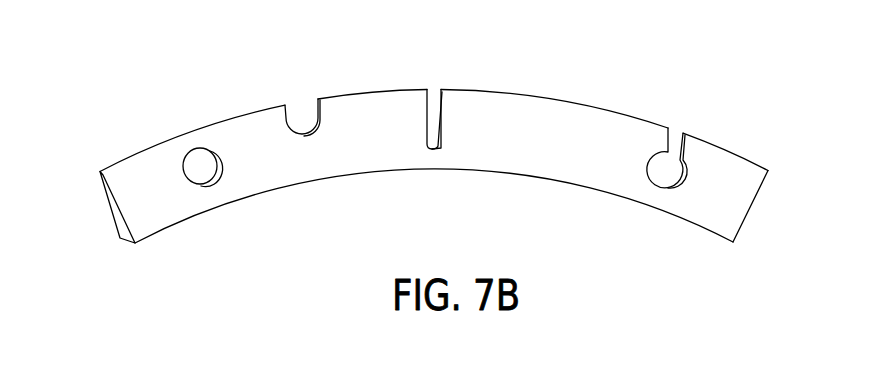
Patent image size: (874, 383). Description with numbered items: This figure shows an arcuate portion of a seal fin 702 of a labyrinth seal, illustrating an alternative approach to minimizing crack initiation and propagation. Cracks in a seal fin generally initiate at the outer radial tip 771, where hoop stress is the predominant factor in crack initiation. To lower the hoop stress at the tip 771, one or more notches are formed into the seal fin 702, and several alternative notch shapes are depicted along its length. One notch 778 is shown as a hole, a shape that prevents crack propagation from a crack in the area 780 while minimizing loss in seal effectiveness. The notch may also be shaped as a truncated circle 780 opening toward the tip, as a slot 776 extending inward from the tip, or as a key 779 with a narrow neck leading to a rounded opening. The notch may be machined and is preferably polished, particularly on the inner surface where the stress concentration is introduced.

The seal fin 702 is at (434, 141).
The outer radial tip 771 is at (141, 151).
The slot 776 is at (442, 149).
The notch 778 is at (184, 181).
The key 779 is at (678, 142).
The truncated circle 780 is at (323, 117).